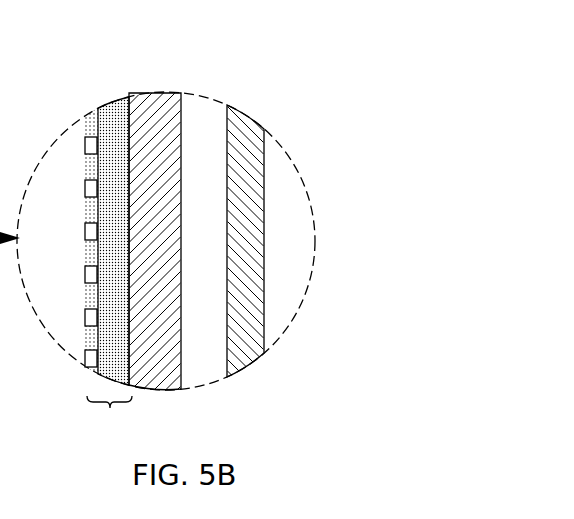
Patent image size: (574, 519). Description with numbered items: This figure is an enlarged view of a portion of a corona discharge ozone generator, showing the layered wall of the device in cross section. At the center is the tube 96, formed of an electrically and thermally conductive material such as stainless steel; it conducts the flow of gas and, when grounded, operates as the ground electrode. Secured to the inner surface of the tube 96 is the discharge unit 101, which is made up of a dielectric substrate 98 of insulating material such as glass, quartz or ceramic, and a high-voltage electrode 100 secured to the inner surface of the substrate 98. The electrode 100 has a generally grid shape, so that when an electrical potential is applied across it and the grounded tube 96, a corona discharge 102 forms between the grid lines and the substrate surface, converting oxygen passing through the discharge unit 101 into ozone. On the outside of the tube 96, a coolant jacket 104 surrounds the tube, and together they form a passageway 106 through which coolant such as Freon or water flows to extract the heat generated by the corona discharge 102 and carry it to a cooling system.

The tube 96 is at (167, 100).
The dielectric substrate 98 is at (118, 117).
The high-voltage electrode 100 is at (85, 143).
The discharge unit 101 is at (109, 418).
The corona discharge 102 is at (85, 333).
The coolant jacket 104 is at (242, 357).
The passageway 106 is at (192, 118).